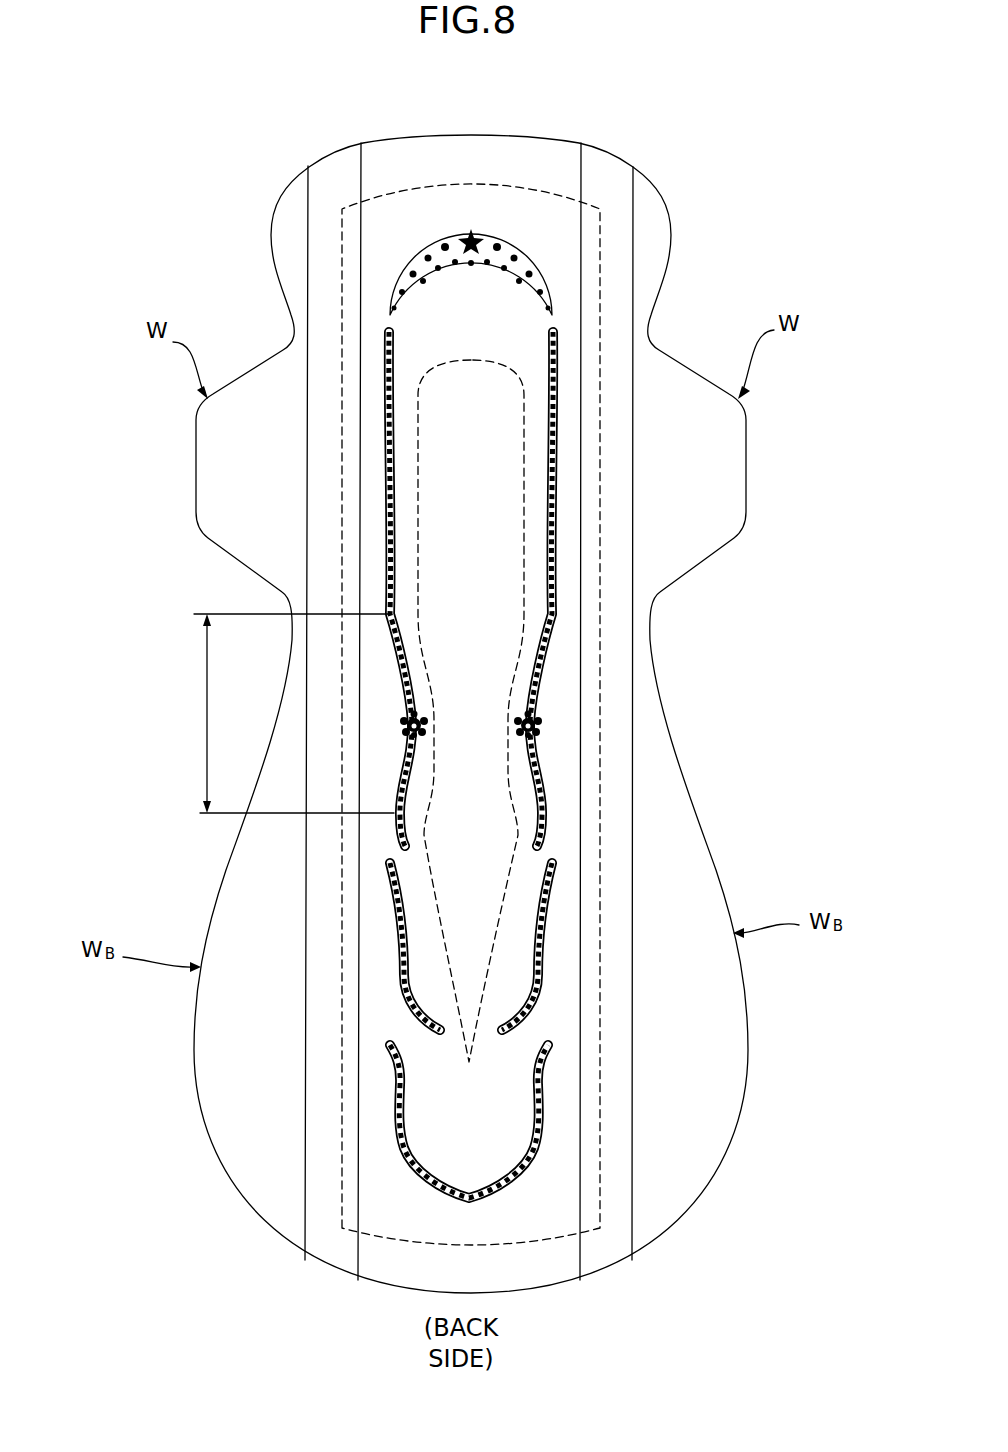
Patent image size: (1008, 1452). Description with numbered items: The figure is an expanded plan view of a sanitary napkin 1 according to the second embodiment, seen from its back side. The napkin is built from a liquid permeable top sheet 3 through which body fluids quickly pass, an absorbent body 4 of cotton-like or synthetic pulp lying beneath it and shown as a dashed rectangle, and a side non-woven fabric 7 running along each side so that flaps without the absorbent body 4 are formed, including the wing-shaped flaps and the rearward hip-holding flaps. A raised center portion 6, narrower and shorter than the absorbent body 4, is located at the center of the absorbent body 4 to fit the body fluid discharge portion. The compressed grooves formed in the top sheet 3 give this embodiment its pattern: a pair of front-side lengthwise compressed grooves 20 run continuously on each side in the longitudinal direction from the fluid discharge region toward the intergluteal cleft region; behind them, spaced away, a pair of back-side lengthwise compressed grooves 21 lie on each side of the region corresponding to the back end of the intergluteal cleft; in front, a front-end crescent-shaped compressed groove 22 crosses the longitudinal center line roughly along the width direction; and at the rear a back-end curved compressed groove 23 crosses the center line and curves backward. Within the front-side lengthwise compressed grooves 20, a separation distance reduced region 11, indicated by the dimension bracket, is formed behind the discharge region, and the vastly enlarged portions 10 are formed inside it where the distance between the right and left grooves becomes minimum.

The sanitary napkin 1 is at (694, 183).
The liquid permeable top sheet 3 is at (402, 1270).
The absorbent body 4 is at (530, 1243).
The raised center portion 6 is at (418, 480).
The side non-woven fabric 7 is at (242, 917).
The vastly enlarged portion 10 is at (394, 720).
The separation distance reduced region 11 is at (285, 713).
The front-side lengthwise compressed groove 20 is at (383, 406).
The back-side lengthwise compressed groove 21 is at (400, 930).
The front-end crescent-shaped compressed groove 22 is at (497, 236).
The back-end curved compressed groove 23 is at (543, 1108).